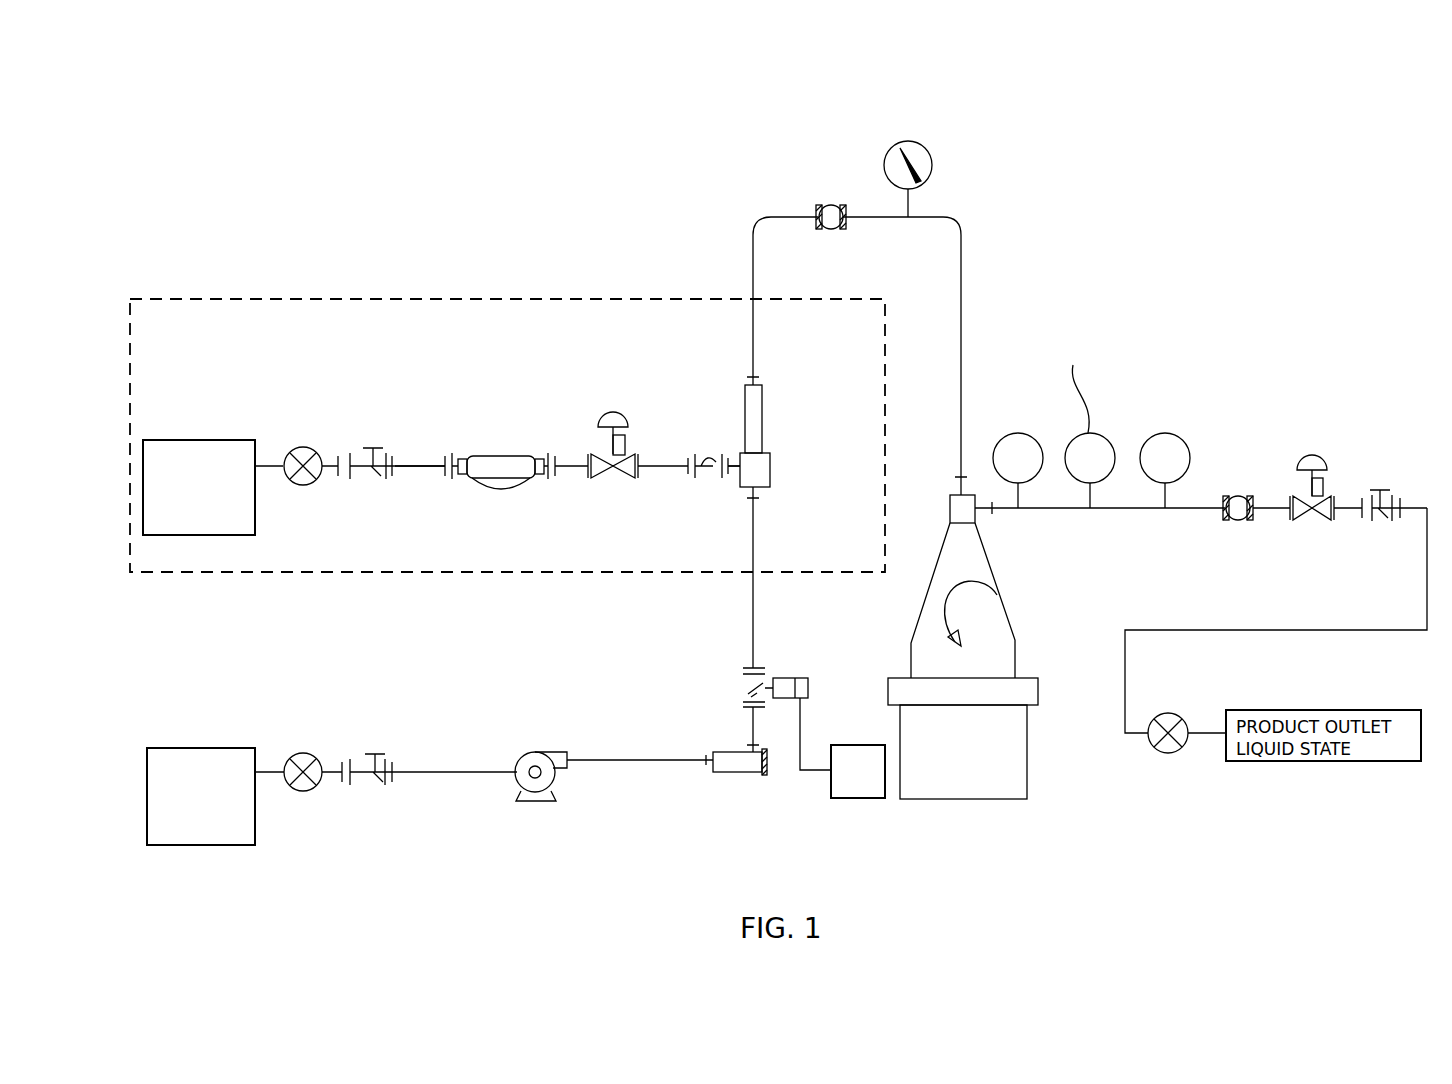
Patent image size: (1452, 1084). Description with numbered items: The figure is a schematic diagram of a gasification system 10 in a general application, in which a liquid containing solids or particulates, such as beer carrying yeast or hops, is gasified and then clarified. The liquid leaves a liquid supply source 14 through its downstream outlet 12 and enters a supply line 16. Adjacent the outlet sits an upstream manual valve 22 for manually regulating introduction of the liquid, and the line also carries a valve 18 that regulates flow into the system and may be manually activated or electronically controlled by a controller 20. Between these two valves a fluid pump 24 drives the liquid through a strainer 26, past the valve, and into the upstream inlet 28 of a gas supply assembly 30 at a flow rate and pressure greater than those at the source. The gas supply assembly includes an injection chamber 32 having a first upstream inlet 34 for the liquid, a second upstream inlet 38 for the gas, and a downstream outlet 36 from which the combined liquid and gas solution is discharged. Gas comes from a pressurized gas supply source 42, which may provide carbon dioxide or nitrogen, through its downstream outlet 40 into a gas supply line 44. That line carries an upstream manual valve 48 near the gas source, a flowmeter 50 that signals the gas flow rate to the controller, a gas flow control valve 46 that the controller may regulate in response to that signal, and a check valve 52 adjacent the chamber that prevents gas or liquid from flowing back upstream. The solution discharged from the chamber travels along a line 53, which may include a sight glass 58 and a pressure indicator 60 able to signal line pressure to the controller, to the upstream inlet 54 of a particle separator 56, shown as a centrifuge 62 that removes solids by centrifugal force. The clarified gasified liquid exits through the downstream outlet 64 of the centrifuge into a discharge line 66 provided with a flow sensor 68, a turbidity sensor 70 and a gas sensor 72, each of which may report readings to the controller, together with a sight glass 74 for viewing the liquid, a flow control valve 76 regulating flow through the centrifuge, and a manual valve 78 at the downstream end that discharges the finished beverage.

The gasification system 10 is at (1024, 123).
The downstream outlet 12 is at (258, 769).
The liquid supply source 14 is at (211, 748).
The supply line 16 is at (462, 773).
The valve 18 is at (760, 668).
The controller 20 is at (845, 785).
The upstream manual valve 22 is at (342, 786).
The fluid pump 24 is at (521, 761).
The strainer 26 is at (768, 773).
The upstream inlet 28 is at (753, 600).
The gas supply assembly 30 is at (385, 299).
The injection chamber 32 is at (765, 400).
The first upstream inlet 34 is at (762, 488).
The downstream outlet 36 is at (750, 384).
The second upstream inlet 38 is at (740, 460).
The downstream outlet 40 is at (258, 464).
The pressurized gas supply source 42 is at (206, 440).
The gas supply line 44 is at (428, 470).
The gas flow control valve 46 is at (598, 462).
The upstream manual valve 48 is at (395, 460).
The flowmeter 50 is at (470, 458).
The check valve 52 is at (718, 462).
The line 53 is at (945, 217).
The upstream inlet 54 is at (951, 498).
The particle separator 56 is at (1017, 633).
The sight glass 58 is at (831, 231).
The pressure indicator 60 is at (912, 207).
The centrifuge 62 is at (1027, 770).
The downstream outlet 64 is at (978, 506).
The discharge line 66 is at (1068, 509).
The flow sensor 68 is at (1022, 509).
The turbidity sensor 70 is at (1100, 509).
The gas sensor 72 is at (1175, 509).
The sight glass 74 is at (1238, 525).
The flow control valve 76 is at (1328, 466).
The manual valve 78 is at (1405, 492).